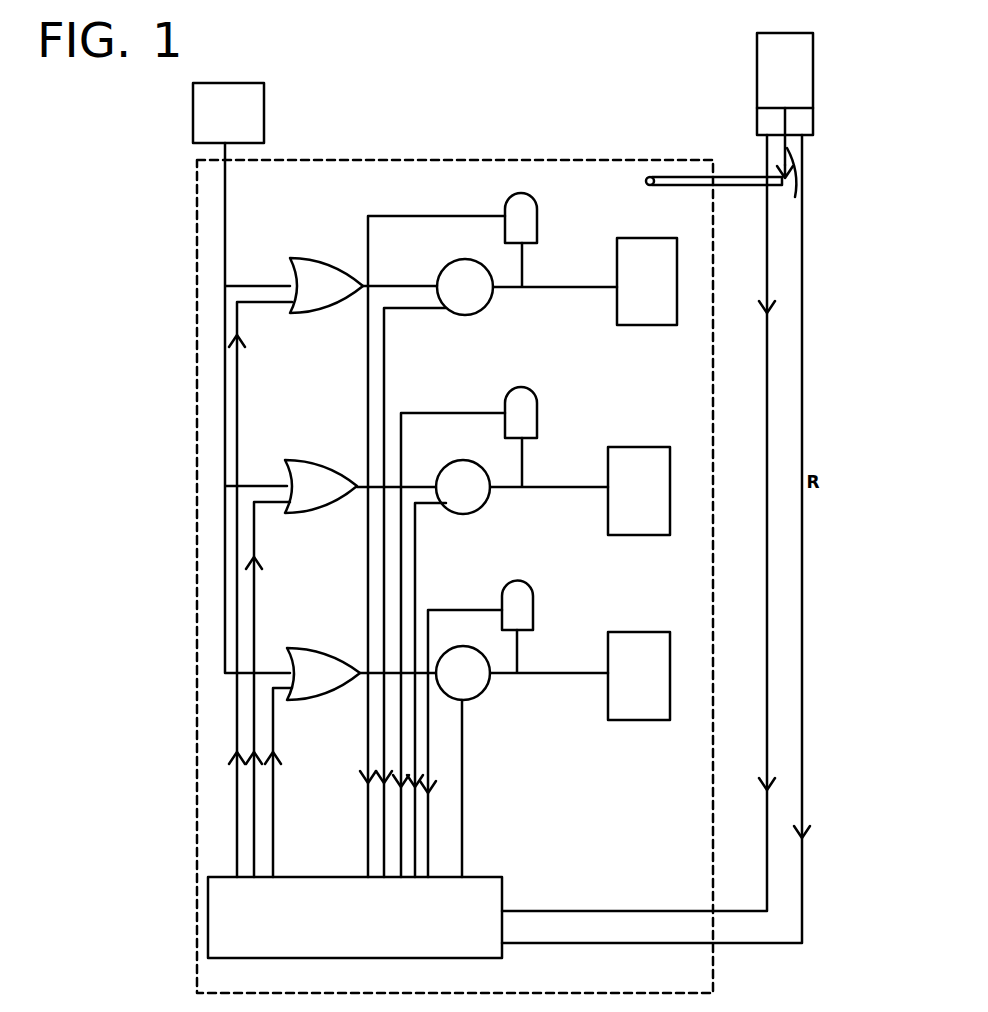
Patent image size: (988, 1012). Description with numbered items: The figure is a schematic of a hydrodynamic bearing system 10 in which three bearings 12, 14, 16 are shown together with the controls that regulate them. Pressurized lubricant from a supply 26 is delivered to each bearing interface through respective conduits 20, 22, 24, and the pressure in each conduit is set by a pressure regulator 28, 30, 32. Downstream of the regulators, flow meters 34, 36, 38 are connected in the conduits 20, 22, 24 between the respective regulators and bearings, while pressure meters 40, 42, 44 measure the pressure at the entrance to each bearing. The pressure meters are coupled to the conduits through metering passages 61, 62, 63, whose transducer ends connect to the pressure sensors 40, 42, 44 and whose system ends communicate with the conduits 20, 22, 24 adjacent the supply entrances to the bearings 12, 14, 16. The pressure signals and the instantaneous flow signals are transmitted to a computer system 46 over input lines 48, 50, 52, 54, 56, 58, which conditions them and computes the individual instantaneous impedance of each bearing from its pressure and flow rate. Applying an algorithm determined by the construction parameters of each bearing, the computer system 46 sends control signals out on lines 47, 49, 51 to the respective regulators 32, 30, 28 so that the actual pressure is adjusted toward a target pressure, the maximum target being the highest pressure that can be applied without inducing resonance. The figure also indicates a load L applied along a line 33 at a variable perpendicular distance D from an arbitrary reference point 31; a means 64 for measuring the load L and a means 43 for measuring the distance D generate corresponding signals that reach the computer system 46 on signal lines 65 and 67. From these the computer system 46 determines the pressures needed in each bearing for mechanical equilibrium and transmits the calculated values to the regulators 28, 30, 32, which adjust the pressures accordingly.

The bearing system 10 is at (368, 150).
The bearing 12 is at (637, 289).
The bearing 14 is at (629, 498).
The bearing 16 is at (629, 685).
The conduit 20 is at (360, 297).
The conduit 22 is at (362, 497).
The conduit 24 is at (362, 684).
The supply 26 is at (218, 121).
The pressure regulator 28 is at (326, 285).
The pressure regulator 30 is at (321, 486).
The arbitrary reference point 31 is at (648, 186).
The pressure regulator 32 is at (323, 674).
The line representing direction of applied load 33 is at (785, 185).
The flow meter 34 is at (465, 287).
The flow meter 36 is at (463, 487).
The flow meter 38 is at (463, 673).
The pressure meter 40 is at (521, 218).
The pressure meter 42 is at (521, 412).
The means for measuring distance D 43 is at (813, 125).
The pressure meter 44 is at (517, 605).
The computer system 46 is at (355, 917).
The control signal line 47 is at (273, 835).
The input line 48 is at (462, 773).
The control signal line 49 is at (255, 620).
The input line 50 is at (428, 858).
The control signal line 51 is at (239, 398).
The input line 52 is at (417, 587).
The input line 54 is at (401, 455).
The input line 56 is at (385, 385).
The input line 58 is at (367, 260).
The metering passage 61 is at (524, 282).
The metering passage 62 is at (524, 475).
The metering passage 63 is at (520, 664).
The means for measuring load L 64 is at (757, 125).
The signal line 65 is at (765, 632).
The signal line 67 is at (802, 637).